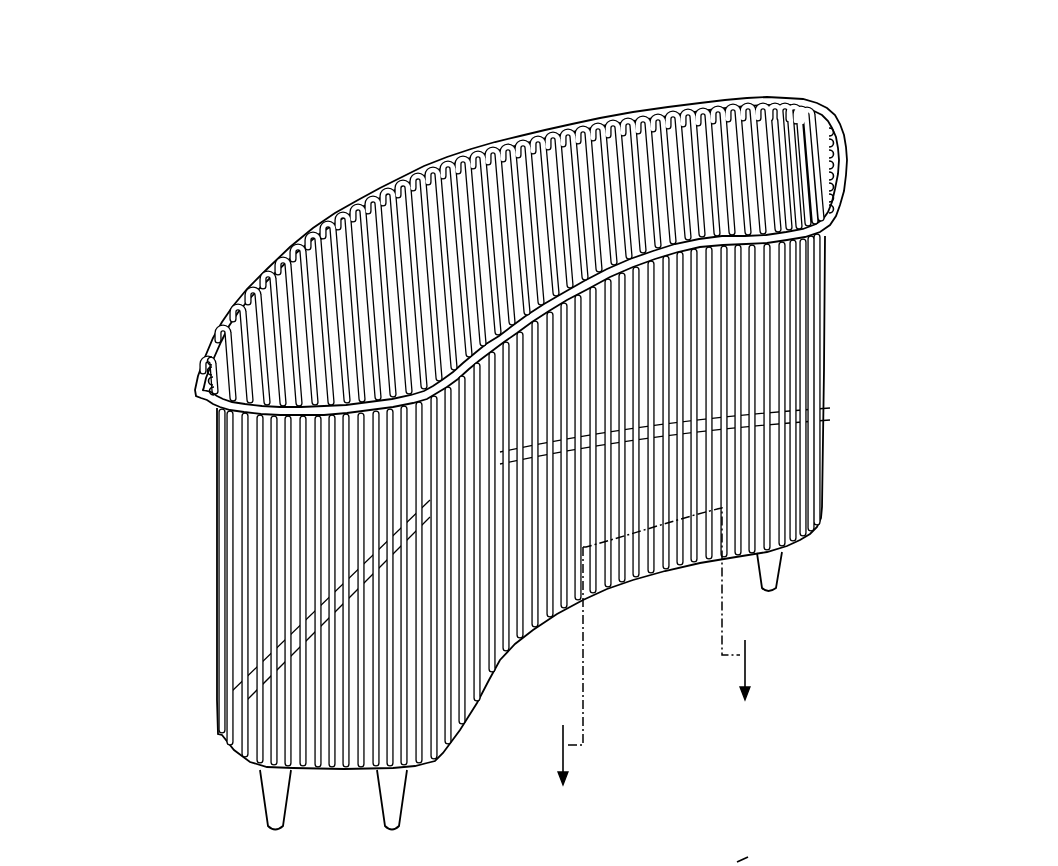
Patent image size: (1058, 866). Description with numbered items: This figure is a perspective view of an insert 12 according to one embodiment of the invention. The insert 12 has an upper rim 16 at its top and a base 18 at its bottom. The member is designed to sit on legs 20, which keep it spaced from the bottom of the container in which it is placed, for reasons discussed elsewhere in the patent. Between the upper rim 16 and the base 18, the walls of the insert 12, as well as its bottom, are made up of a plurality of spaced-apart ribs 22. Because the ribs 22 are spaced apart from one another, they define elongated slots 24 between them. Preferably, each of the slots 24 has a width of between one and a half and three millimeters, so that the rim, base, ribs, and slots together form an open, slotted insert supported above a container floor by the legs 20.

The insert 12 is at (452, 122).
The upper rim 16 is at (213, 343).
The base 18 is at (243, 762).
The legs 20 is at (393, 803).
The ribs 22 is at (550, 148).
The elongated slots 24 is at (622, 137).